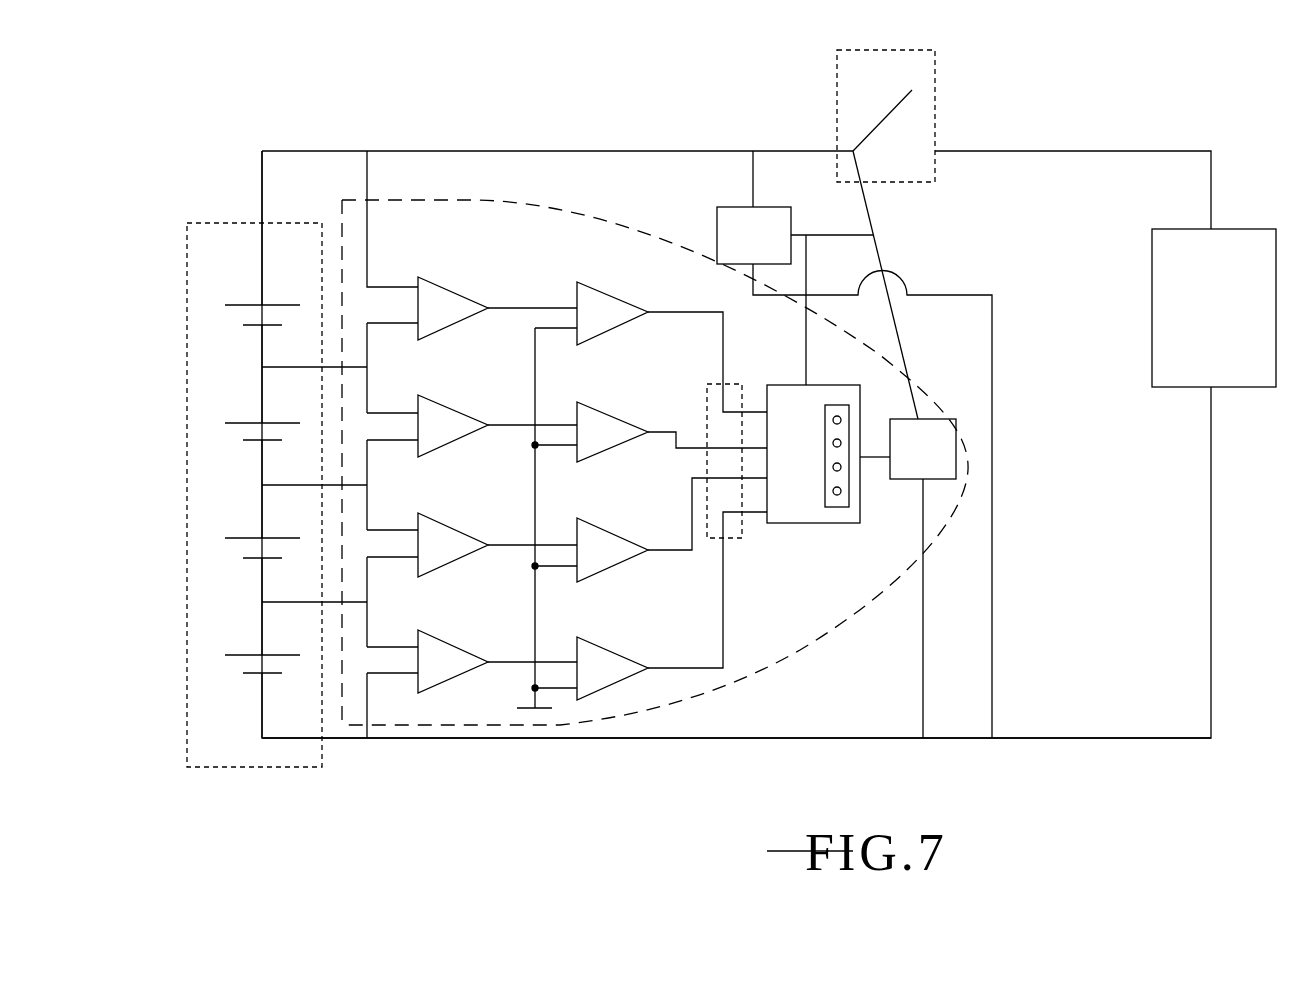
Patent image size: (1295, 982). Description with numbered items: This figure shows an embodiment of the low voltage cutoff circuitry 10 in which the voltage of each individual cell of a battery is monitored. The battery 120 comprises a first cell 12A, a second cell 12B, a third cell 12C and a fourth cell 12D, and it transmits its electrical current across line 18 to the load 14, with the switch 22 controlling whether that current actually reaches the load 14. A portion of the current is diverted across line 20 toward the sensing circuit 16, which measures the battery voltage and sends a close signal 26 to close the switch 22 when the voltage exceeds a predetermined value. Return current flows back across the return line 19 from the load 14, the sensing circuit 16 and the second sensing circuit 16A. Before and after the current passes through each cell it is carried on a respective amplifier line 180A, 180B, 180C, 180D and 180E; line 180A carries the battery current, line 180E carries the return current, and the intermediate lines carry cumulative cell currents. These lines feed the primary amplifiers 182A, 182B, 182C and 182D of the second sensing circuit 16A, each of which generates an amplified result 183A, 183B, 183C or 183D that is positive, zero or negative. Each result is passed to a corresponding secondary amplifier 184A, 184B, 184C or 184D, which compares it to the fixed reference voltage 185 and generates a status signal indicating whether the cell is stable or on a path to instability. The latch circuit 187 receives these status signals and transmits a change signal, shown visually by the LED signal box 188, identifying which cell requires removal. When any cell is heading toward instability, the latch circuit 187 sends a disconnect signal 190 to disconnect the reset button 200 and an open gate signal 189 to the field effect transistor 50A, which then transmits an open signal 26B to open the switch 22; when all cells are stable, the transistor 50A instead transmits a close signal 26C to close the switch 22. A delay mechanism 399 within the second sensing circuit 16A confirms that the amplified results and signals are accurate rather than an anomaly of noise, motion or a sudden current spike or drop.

The low voltage cutoff circuitry 10 is at (657, 806).
The first cell 12A is at (243, 303).
The second cell 12B is at (243, 421).
The third cell 12C is at (243, 536).
The fourth cell 12D is at (243, 653).
The load 14 is at (1214, 308).
The sensing circuit 16 is at (754, 235).
The second sensing circuit 16A is at (850, 608).
The line 18 is at (505, 150).
The return line 19 is at (540, 742).
The line 20 is at (753, 182).
The switch 22 is at (855, 50).
The close signal 26 is at (820, 204).
The open signal 26B is at (913, 285).
The close signal 26C is at (899, 332).
The field effect transistor 50A is at (923, 578).
The battery 120 is at (242, 222).
The amplifier line 180A is at (367, 222).
The amplifier line 180B is at (370, 356).
The amplifier line 180C is at (370, 474).
The amplifier line 180D is at (370, 592).
The amplifier line 180E is at (372, 707).
The primary amplifier 182A is at (450, 292).
The primary amplifier 182B is at (440, 408).
The primary amplifier 182C is at (440, 528).
The primary amplifier 182D is at (443, 645).
The amplified result 183A is at (505, 314).
The amplified result 183B is at (516, 432).
The amplified result 183C is at (515, 552).
The amplified result 183D is at (512, 668).
The secondary amplifier 184A is at (600, 287).
The secondary amplifier 184B is at (600, 405).
The secondary amplifier 184C is at (604, 524).
The secondary amplifier 184D is at (606, 640).
The fixed reference voltage 185 is at (552, 708).
The latch circuit 187 is at (813, 454).
The LED signal box 188 is at (834, 507).
The open gate signal 189 is at (886, 504).
The disconnect signal 190 is at (803, 345).
The reset button 200 is at (800, 262).
The delay mechanism 399 is at (740, 540).